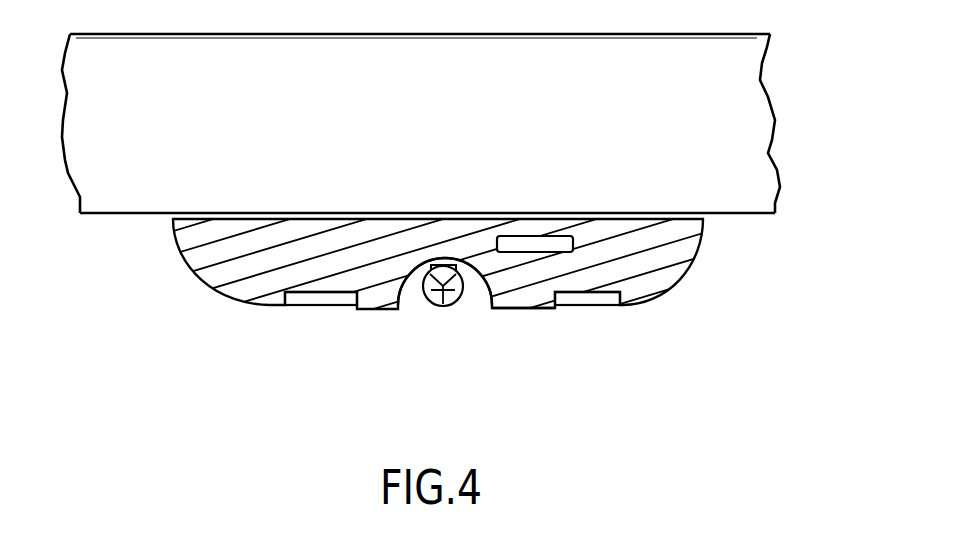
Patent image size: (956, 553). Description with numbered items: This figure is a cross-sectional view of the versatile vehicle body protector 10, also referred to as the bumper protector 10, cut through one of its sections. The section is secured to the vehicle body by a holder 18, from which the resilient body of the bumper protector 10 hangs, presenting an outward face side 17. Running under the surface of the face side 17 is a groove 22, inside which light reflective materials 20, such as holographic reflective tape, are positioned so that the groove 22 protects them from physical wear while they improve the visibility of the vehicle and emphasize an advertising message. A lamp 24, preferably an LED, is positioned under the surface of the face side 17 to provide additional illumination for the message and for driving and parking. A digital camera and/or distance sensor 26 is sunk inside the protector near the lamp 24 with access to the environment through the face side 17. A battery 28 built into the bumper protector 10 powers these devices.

The body protector 10 is at (675, 426).
The face side 17 is at (377, 310).
The holder 18 is at (366, 213).
The light reflective materials 20 is at (587, 305).
The groove 22 is at (602, 305).
The lamp 24 is at (447, 304).
The distance sensor 26 is at (480, 290).
The battery 28 is at (522, 236).